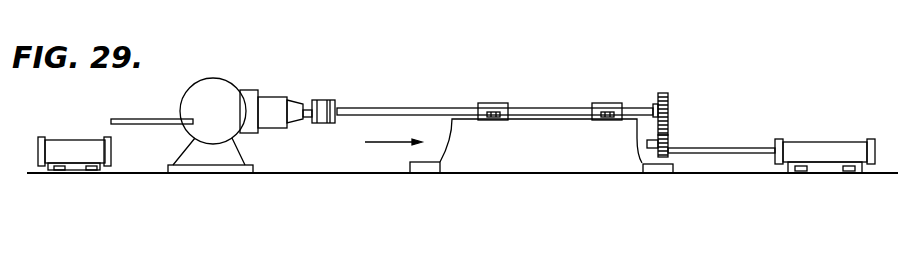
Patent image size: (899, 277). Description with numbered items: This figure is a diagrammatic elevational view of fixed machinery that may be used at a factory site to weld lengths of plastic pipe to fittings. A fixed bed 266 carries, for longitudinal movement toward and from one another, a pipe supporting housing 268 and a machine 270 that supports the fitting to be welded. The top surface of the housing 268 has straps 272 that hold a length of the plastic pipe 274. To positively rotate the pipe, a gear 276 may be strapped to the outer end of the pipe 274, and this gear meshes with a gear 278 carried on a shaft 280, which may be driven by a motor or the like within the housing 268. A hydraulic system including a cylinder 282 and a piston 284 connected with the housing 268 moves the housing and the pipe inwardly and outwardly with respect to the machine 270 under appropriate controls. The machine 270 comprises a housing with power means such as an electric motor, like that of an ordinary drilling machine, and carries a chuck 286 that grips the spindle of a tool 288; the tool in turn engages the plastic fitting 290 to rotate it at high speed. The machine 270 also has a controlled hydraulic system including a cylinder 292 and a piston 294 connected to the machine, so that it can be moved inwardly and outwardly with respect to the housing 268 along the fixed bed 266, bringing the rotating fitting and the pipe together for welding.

The fixed bed 266 is at (286, 176).
The pipe supporting housing 268 is at (563, 163).
The machine 270 is at (192, 100).
The straps 272 is at (498, 103).
The plastic pipe 274 is at (437, 110).
The gear 276 is at (668, 105).
The gear 278 is at (668, 142).
The shaft 280 is at (645, 150).
The cylinder 282 is at (827, 150).
The piston 284 is at (738, 150).
The chuck 286 is at (295, 105).
The tool 288 is at (305, 123).
The plastic fitting 290 is at (328, 105).
The cylinder 292 is at (72, 118).
The piston 294 is at (153, 107).